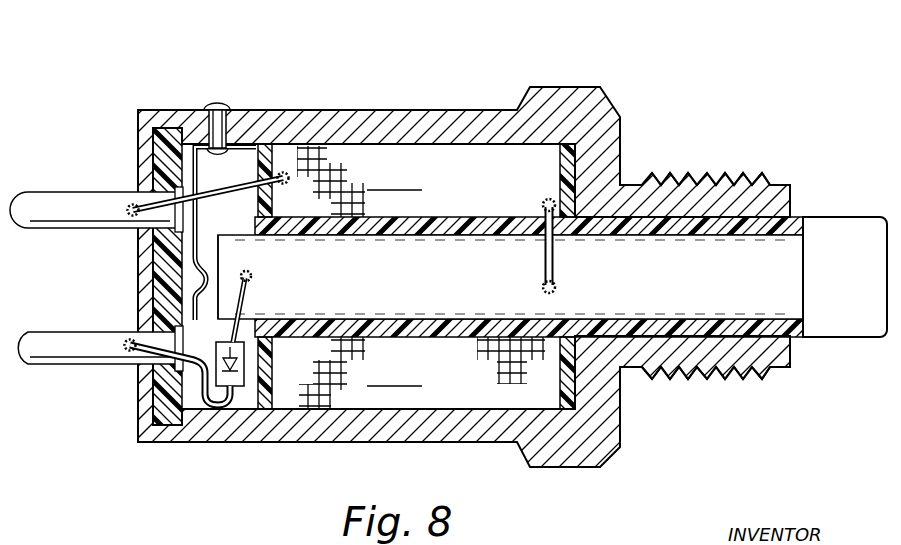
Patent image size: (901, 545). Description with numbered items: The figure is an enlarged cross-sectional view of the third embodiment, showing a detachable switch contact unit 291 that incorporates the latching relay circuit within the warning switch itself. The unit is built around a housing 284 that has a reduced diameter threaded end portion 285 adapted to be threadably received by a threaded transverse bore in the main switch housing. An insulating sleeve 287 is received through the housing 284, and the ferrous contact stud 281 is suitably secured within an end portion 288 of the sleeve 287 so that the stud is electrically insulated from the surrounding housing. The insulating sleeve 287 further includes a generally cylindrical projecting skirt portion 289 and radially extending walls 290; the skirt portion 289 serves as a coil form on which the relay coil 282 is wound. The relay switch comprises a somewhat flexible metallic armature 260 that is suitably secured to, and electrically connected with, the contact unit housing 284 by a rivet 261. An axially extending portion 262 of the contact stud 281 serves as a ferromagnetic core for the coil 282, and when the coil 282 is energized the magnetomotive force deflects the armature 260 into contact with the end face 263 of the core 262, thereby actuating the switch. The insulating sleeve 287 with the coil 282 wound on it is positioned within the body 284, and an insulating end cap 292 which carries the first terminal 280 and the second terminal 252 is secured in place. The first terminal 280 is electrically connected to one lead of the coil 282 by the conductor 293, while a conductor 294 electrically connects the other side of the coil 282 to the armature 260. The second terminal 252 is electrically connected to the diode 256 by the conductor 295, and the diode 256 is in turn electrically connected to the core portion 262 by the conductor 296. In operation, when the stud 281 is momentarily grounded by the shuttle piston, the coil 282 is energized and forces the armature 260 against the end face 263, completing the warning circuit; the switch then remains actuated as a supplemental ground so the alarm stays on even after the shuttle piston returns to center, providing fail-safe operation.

The second terminal 252 is at (53, 338).
The diode 256 is at (238, 388).
The armature 260 is at (197, 232).
The rivet 261 is at (208, 108).
The axially extending portion 262 is at (461, 284).
The end face 263 is at (216, 242).
The first terminal 280 is at (53, 200).
The contact stud 281 is at (841, 233).
The relay coil 282 is at (405, 145).
The housing 284 is at (492, 112).
The threaded end portion 285 is at (702, 168).
The insulating sleeve 287 is at (286, 146).
The end portion 288 is at (450, 272).
The skirt portion 289 is at (437, 220).
The radially extending walls 290 is at (562, 160).
The detachable switch contact unit 291 is at (589, 80).
The insulating end cap 292 is at (157, 260).
The conductor 293 is at (217, 191).
The conductor 294 is at (555, 250).
The conductor 295 is at (196, 410).
The conductor 296 is at (256, 297).